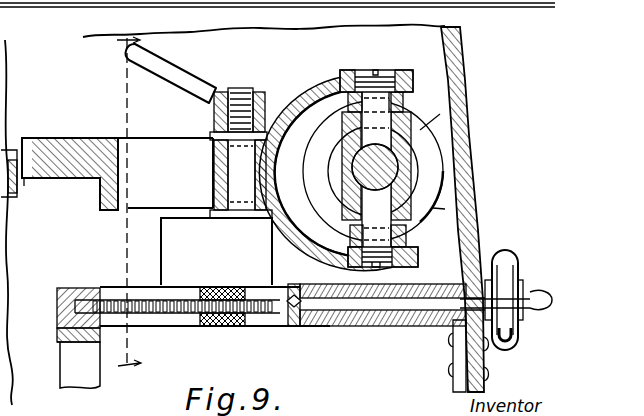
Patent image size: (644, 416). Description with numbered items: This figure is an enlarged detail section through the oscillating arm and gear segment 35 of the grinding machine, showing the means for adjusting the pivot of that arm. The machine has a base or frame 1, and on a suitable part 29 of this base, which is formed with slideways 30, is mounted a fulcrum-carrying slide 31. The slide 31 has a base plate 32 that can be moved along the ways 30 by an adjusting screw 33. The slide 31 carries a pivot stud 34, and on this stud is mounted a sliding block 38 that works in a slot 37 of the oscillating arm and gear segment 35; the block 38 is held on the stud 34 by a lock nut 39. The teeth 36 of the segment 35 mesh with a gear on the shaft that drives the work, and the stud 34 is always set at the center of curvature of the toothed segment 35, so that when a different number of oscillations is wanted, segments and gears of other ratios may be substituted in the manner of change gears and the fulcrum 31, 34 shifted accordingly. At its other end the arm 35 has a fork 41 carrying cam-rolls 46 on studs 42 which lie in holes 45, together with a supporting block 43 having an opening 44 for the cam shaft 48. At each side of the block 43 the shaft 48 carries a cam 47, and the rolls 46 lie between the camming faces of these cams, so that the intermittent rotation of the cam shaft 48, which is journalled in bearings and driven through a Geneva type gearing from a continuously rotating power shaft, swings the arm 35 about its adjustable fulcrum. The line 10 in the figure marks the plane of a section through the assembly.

The base or frame 1 is at (0, 412).
The section line 10 is at (136, 27).
The part of the base 29 is at (86, 287).
The slideways 30 is at (168, 328).
The fulcrum-carrying slide 31 is at (216, 251).
The base plate 32 is at (228, 328).
The adjusting screw 33 is at (282, 328).
The pivot stud 34 is at (218, 182).
The oscillating arm and gear segment 35 is at (0, 112).
The teeth 36 is at (27, 180).
The slot 37 is at (143, 196).
The sliding block 38 is at (196, 140).
The lock nut 39 is at (197, 87).
The fork 41 is at (303, 87).
The studs 42 is at (388, 73).
The supporting block 43 is at (400, 142).
The opening 44 is at (400, 187).
The holes 45 is at (343, 73).
The cam-rolls 46 is at (403, 95).
The cam 47 is at (440, 114).
The cam shaft 48 is at (445, 209).